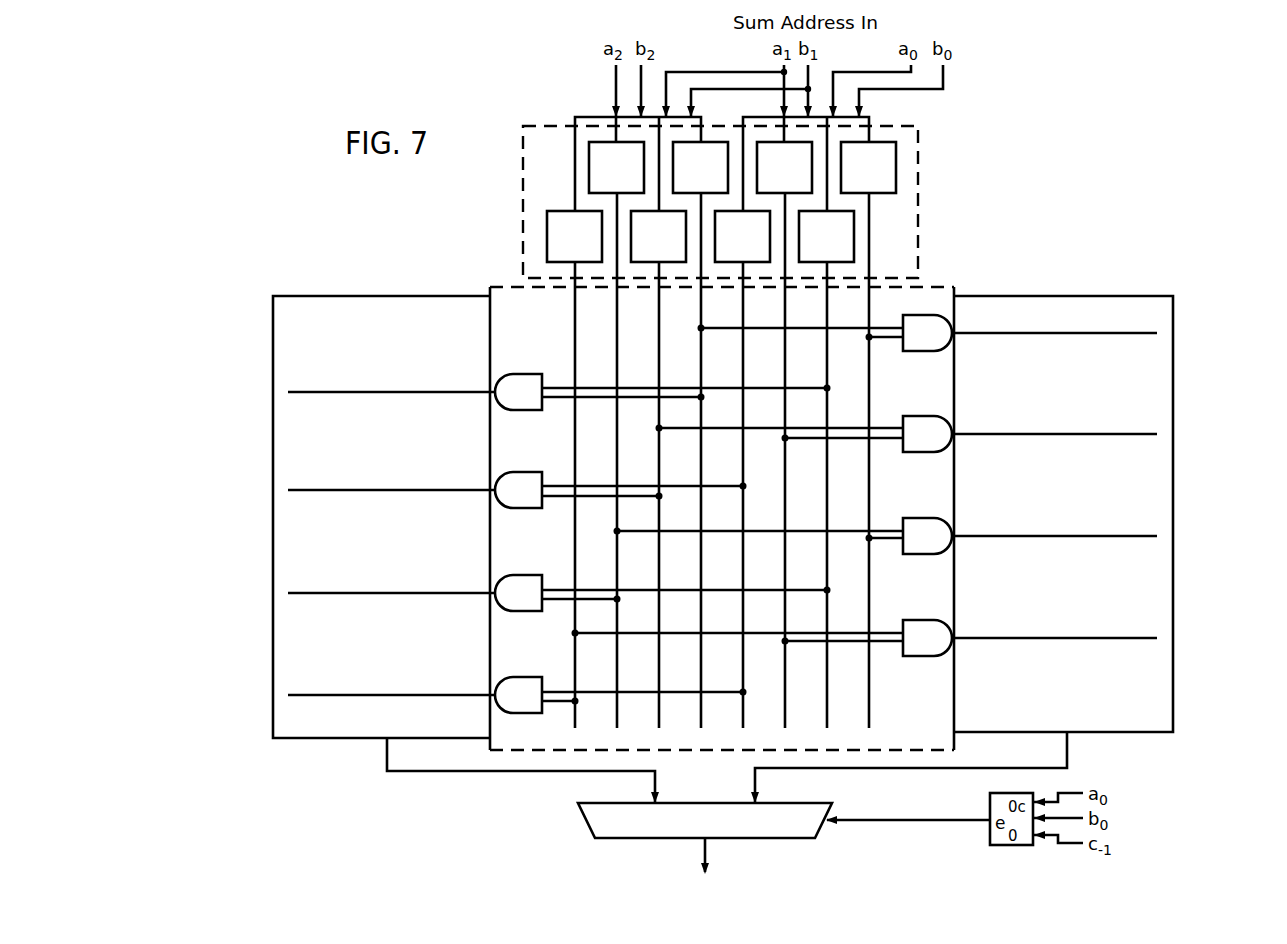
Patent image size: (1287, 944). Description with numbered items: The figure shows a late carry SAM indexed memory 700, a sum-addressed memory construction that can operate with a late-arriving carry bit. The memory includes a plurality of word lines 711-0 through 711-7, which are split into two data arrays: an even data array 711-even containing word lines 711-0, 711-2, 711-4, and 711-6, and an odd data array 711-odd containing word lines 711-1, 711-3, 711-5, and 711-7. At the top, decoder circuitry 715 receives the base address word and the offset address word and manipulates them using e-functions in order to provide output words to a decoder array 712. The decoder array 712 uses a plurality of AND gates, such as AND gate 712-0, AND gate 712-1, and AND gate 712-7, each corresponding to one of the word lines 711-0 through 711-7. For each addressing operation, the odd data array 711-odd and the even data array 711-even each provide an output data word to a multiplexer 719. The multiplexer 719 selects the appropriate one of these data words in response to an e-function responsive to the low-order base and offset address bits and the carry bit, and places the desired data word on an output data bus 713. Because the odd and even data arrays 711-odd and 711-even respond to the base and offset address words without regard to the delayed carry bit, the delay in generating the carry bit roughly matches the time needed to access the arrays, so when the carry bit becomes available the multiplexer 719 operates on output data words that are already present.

The late carry SAM indexed memory 700 is at (373, 824).
The word line 711-0 is at (1143, 320).
The word line 711-1 is at (315, 377).
The word line 711-2 is at (1143, 420).
The word line 711-3 is at (317, 478).
The word line 711-4 is at (1143, 522).
The word line 711-5 is at (317, 578).
The word line 711-6 is at (1143, 625).
The word line 711-7 is at (317, 680).
The odd data array 711-odd is at (315, 735).
The even data array 711-even is at (1163, 735).
The decoder array 712 is at (731, 505).
The AND gate 712-0 is at (922, 318).
The AND gate 712-1 is at (518, 378).
The AND gate 712-7 is at (523, 703).
The output data bus 713 is at (713, 863).
The decoder circuitry 715 is at (918, 162).
The multiplexer 719 is at (813, 832).